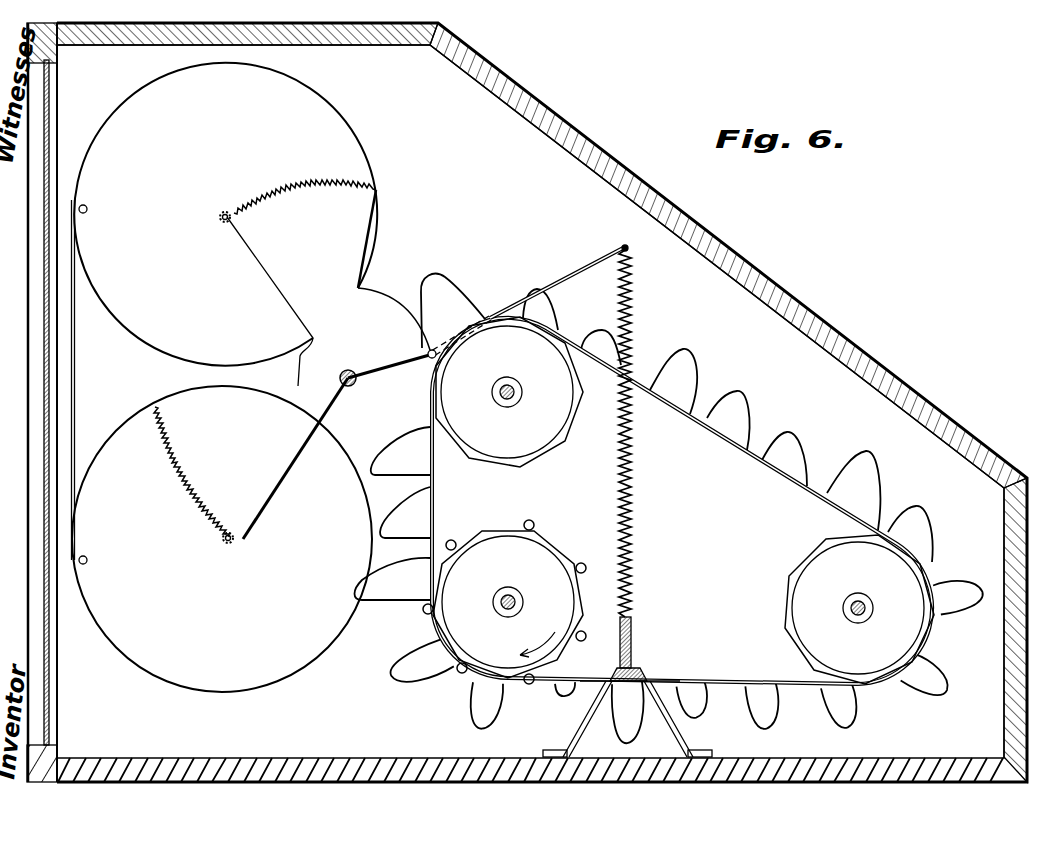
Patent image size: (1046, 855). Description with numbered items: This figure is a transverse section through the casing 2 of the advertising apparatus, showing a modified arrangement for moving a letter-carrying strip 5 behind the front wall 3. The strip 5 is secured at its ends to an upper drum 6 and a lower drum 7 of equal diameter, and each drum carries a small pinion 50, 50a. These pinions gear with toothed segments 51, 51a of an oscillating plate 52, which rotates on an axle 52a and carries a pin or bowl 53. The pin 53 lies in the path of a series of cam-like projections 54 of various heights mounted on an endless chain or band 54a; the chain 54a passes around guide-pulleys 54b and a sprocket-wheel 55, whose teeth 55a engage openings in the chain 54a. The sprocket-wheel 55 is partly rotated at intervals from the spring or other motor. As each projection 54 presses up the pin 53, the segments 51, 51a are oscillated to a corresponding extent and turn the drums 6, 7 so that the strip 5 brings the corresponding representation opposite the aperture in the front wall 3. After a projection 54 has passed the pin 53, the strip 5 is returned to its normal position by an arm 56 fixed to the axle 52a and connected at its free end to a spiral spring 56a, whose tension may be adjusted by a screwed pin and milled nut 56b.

The casing 2 is at (542, 402).
The front wall 3 is at (30, 402).
The strip 5 is at (76, 418).
The upper drum 6 is at (225, 214).
The lower drum 7 is at (222, 539).
The pinion 50 is at (228, 212).
The pinion 50a is at (233, 546).
The toothed segment 51 is at (325, 195).
The toothed segment 51a is at (250, 455).
The oscillating plate 52 is at (328, 288).
The axle 52a is at (352, 387).
The pin or bowl 53 is at (428, 354).
The cam-like projection 54 is at (418, 406).
The endless chain or band 54a is at (662, 681).
The guide-pulley 54b is at (685, 500).
The sprocket-wheel 55 is at (508, 604).
The tooth 55a is at (528, 502).
The arm 56 is at (576, 280).
The spiral spring 56a is at (636, 336).
The screwed pin and milled nut 56b is at (637, 656).